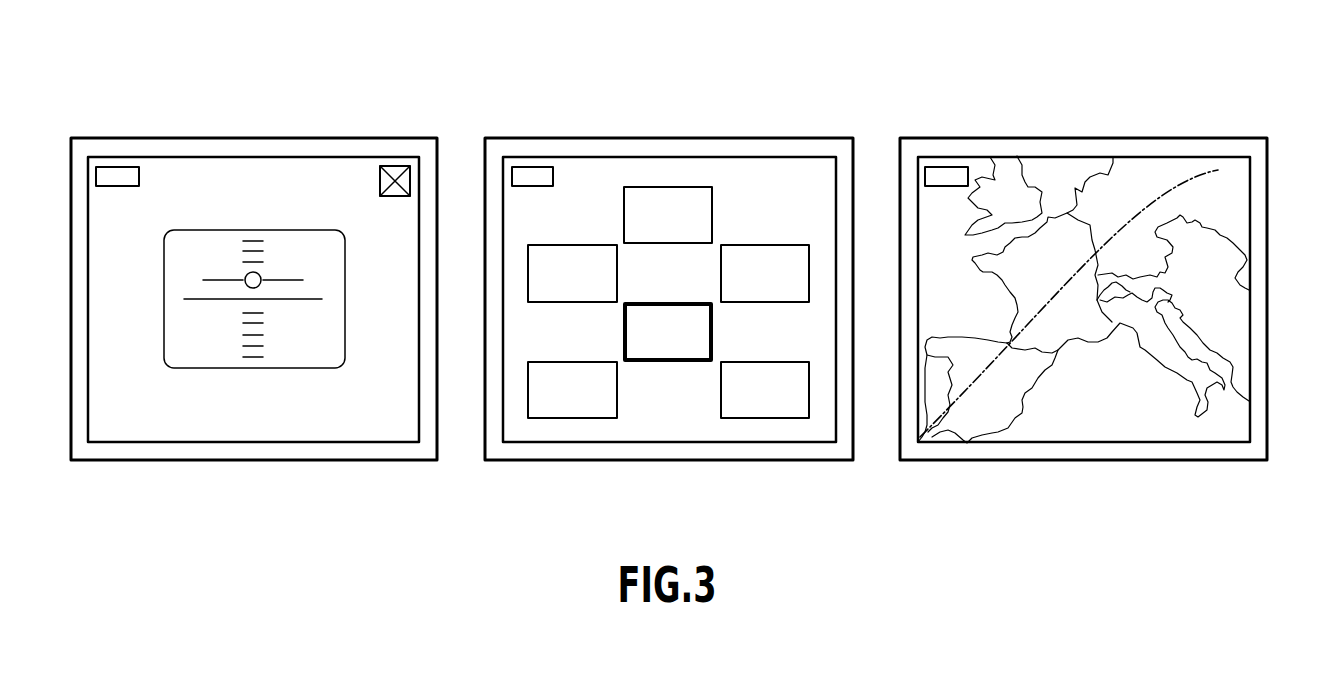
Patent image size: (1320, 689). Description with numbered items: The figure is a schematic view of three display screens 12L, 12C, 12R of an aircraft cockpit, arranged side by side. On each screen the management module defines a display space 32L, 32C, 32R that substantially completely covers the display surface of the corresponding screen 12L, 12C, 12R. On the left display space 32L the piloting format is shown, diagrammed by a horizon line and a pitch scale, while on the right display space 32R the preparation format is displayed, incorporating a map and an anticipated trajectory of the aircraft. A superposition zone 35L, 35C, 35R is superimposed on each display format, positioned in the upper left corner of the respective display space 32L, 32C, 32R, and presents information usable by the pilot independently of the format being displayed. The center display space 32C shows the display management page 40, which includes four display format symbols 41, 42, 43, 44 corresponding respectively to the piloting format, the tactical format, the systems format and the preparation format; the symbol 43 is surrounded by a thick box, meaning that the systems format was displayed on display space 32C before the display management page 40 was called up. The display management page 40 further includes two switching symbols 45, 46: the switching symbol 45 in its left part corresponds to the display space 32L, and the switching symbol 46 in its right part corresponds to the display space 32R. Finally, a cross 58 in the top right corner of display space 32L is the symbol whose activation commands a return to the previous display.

The display screen 12L is at (261, 119).
The display screen 12C is at (665, 120).
The display screen 12R is at (1070, 120).
The display space 32L is at (120, 443).
The display space 32C is at (538, 443).
The display space 32R is at (938, 443).
The superposition zone 35L is at (118, 175).
The superposition zone 35C is at (537, 174).
The superposition zone 35R is at (952, 175).
The cross 58 is at (393, 177).
The display management page 40 is at (532, 211).
The display format symbol 41 is at (668, 215).
The display format symbol 42 is at (765, 273).
The display format symbol 43 is at (668, 332).
The display format symbol 44 is at (572, 273).
The switching symbol 45 is at (572, 390).
The switching symbol 46 is at (765, 390).